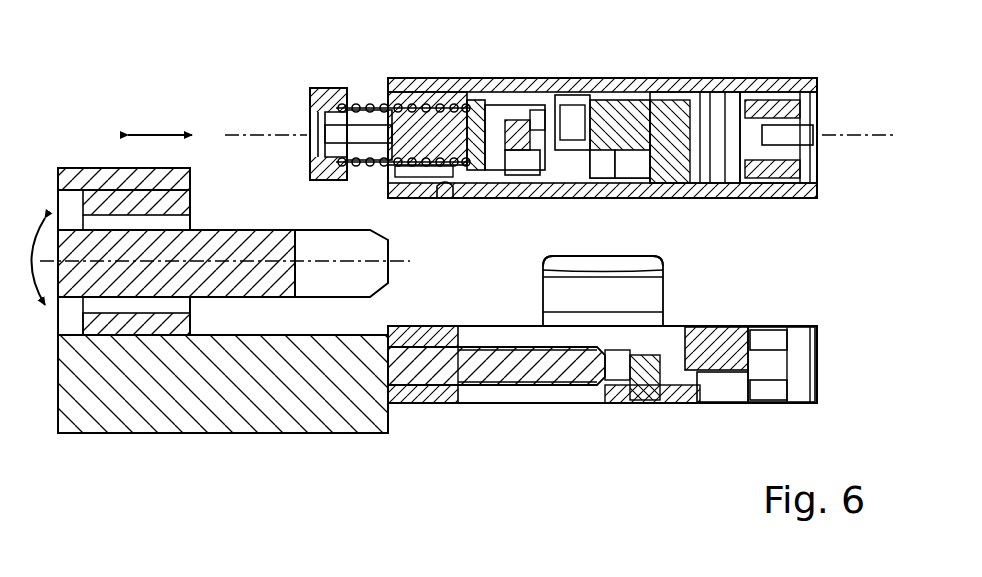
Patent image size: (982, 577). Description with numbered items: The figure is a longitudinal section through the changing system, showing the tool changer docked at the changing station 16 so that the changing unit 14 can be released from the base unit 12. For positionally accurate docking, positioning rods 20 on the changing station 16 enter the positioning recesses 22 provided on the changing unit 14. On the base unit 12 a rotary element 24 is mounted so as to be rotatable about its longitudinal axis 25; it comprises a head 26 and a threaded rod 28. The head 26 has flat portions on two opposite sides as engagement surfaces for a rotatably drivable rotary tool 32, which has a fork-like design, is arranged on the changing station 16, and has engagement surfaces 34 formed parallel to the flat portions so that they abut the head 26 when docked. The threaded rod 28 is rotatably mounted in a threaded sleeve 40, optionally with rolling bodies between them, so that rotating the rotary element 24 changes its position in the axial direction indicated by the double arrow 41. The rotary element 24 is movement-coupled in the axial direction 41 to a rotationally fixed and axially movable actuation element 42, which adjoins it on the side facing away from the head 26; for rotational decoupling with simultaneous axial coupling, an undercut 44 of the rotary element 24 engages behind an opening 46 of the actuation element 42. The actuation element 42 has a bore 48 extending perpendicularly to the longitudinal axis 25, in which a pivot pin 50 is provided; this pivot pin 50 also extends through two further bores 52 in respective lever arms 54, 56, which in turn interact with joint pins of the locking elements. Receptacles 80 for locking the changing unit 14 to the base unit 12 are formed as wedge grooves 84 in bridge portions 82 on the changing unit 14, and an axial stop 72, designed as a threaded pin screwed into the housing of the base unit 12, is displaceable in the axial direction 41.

The base unit 12 is at (812, 190).
The changing unit 14 is at (815, 370).
The changing station 16 is at (228, 420).
The positioning rods 20 is at (565, 400).
The positioning recesses 22 is at (476, 405).
The rotary element 24 is at (366, 104).
The longitudinal axis 25 is at (250, 132).
The head 26 is at (322, 97).
The threaded rod 28 is at (440, 100).
The rotary tool 32 is at (262, 247).
The engagement surfaces 34 is at (325, 245).
The threaded sleeve 40 is at (415, 96).
The double arrow 41 is at (163, 133).
The actuation element 42 is at (660, 118).
The undercut 44 is at (520, 105).
The opening 46 is at (488, 110).
The bore 48 is at (575, 105).
The pivot pin 50 is at (605, 118).
The further bores 52 is at (526, 160).
The lever arm 54 is at (615, 152).
The lever arm 56 is at (590, 152).
The axial stop 72 is at (800, 130).
The receptacles 80 is at (648, 296).
The bridge portions 82 is at (650, 262).
The wedge grooves 84 is at (603, 291).